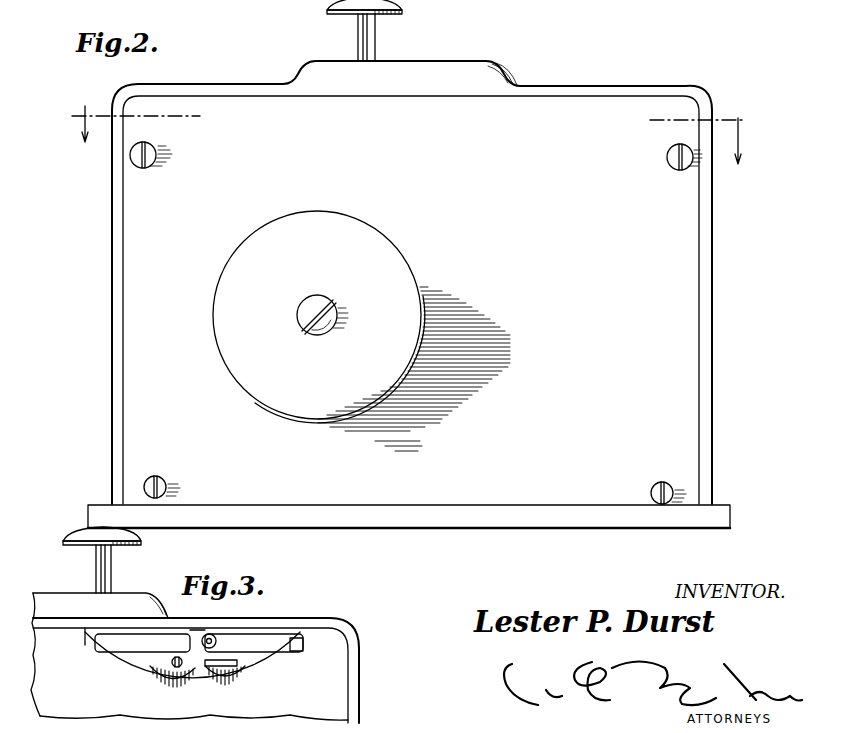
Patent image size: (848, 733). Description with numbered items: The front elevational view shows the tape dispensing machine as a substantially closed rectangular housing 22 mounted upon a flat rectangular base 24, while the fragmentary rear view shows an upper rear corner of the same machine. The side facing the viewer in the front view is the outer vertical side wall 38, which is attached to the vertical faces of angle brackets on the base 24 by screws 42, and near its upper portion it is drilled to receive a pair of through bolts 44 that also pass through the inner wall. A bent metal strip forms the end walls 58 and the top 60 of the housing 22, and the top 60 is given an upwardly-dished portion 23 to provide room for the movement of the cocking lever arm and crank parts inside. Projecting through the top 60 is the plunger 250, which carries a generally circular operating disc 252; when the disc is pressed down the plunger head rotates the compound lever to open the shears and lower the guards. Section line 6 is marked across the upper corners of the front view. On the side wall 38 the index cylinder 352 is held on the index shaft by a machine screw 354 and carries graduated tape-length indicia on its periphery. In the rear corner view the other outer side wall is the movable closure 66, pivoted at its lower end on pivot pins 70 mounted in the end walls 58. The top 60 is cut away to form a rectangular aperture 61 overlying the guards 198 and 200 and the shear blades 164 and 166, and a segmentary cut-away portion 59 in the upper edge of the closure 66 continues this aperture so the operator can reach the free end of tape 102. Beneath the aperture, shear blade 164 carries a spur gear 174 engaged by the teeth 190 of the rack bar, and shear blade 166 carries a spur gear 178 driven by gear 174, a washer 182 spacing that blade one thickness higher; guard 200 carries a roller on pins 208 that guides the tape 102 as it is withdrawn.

In FIG. 2, the housing 22 is at (674, 262).
In FIG. 3, the housing 22 is at (371, 668).
In FIG. 2, the upwardly-dished portion 23 is at (462, 68).
In FIG. 3, the upwardly-dished portion 23 is at (86, 600).
In FIG. 2, the base 24 is at (420, 518).
In FIG. 2, the outer vertical side wall 38 is at (538, 498).
In FIG. 2, the screws 42 is at (163, 484).
In FIG. 2, the through bolts 44 is at (157, 160).
In FIG. 2, the end walls 58 is at (112, 272).
In FIG. 3, the end walls 58 is at (352, 704).
In FIG. 3, the segmentary cut-away portion 59 is at (118, 664).
In FIG. 2, the top 60 is at (249, 92).
In FIG. 3, the top 60 is at (322, 620).
In FIG. 3, the rectangular aperture 61 is at (296, 620).
In FIG. 3, the movable closure 66 is at (334, 650).
In FIG. 2, the pivot pins 70 is at (112, 490).
In FIG. 2, the section line 6 is at (408, 145).
In FIG. 3, the free end of tape 102 is at (220, 682).
In FIG. 3, the shear blade 164 is at (150, 641).
In FIG. 3, the shear blade 166 is at (254, 642).
In FIG. 3, the spur gear 174 is at (188, 680).
In FIG. 3, the spur gear 178 is at (230, 676).
In FIG. 3, the washer 182 is at (240, 676).
In FIG. 3, the teeth 190 is at (160, 676).
In FIG. 3, the guard element 198 is at (117, 643).
In FIG. 3, the guard element 200 is at (272, 644).
In FIG. 3, the pins 208 is at (212, 634).
In FIG. 2, the plunger 250 is at (376, 38).
In FIG. 3, the plunger 250 is at (111, 565).
In FIG. 2, the operating disc 252 is at (402, 5).
In FIG. 3, the operating disc 252 is at (68, 535).
In FIG. 2, the index cylinder 352 is at (338, 212).
In FIG. 2, the machine screw 354 is at (305, 332).